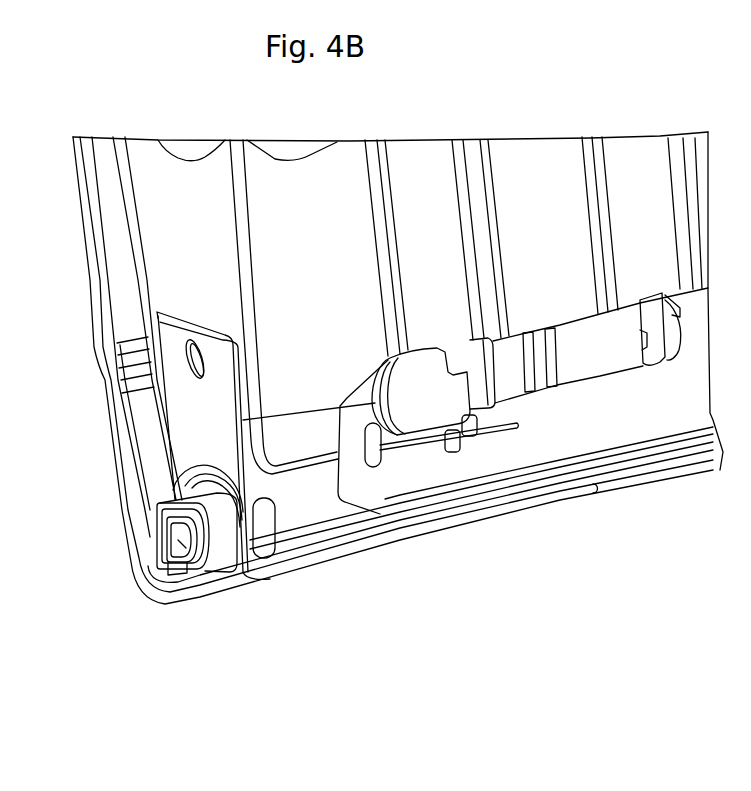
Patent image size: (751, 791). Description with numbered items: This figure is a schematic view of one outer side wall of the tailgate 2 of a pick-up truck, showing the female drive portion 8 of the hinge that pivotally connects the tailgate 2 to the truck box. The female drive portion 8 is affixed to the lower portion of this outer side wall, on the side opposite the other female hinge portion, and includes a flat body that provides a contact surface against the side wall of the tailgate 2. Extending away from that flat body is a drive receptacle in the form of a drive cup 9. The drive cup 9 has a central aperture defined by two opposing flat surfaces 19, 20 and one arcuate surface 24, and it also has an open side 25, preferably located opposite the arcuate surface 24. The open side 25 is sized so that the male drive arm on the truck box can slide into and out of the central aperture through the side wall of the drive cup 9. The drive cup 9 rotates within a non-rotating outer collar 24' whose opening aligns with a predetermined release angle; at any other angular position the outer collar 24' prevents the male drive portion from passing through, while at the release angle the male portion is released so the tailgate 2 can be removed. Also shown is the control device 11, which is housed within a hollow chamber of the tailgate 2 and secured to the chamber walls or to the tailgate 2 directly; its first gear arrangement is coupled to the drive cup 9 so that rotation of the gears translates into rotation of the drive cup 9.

The tailgate 2 is at (302, 186).
The female drive portion 8 is at (225, 422).
The drive cup 9 is at (168, 528).
The control device 11 is at (437, 467).
The flat surface 19 is at (158, 530).
The flat surface 20 is at (197, 553).
The arcuate surface 24 is at (157, 513).
The outer collar 24' is at (261, 586).
The open side 25 is at (180, 583).